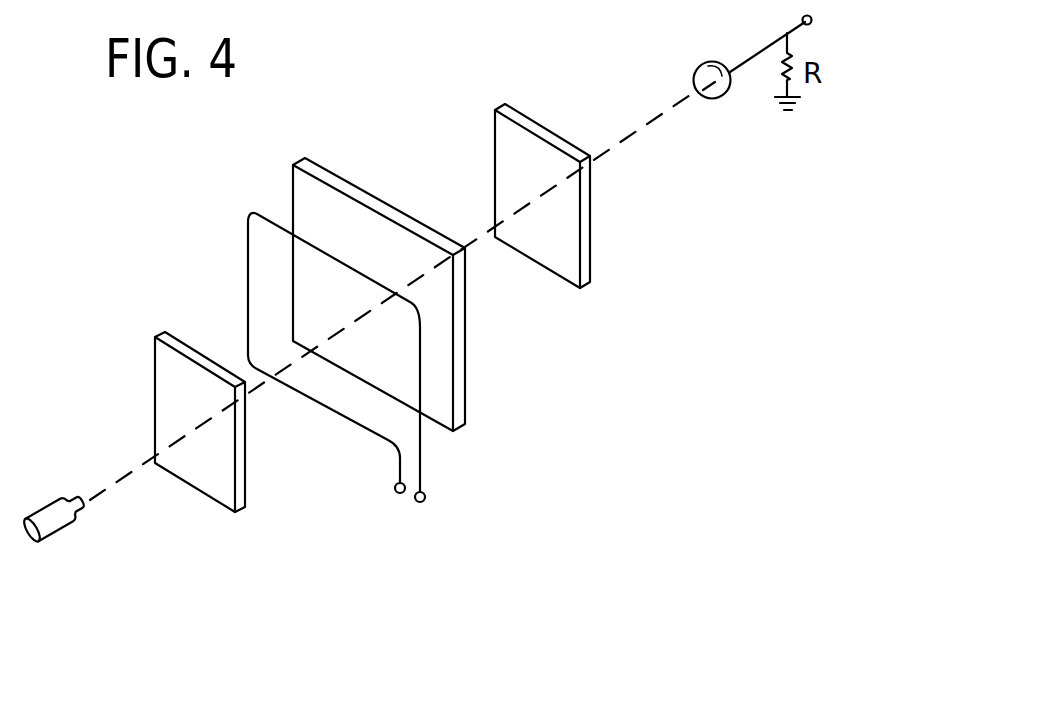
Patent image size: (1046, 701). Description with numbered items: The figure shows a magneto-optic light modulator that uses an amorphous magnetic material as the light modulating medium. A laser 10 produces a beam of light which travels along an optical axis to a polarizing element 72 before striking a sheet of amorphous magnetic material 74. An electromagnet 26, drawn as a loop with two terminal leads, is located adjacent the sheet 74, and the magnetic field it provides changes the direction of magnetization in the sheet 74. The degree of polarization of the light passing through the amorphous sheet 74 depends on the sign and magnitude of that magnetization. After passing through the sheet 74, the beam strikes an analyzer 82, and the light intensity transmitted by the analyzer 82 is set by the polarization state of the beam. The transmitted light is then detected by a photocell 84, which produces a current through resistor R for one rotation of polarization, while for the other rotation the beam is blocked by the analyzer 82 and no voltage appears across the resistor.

The laser 10 is at (55, 520).
The electromagnet 26 is at (238, 301).
The polarizing element 72 is at (222, 504).
The amorphous magnetic material 74 is at (444, 421).
The analyzer 82 is at (569, 278).
The photocell 84 is at (704, 58).